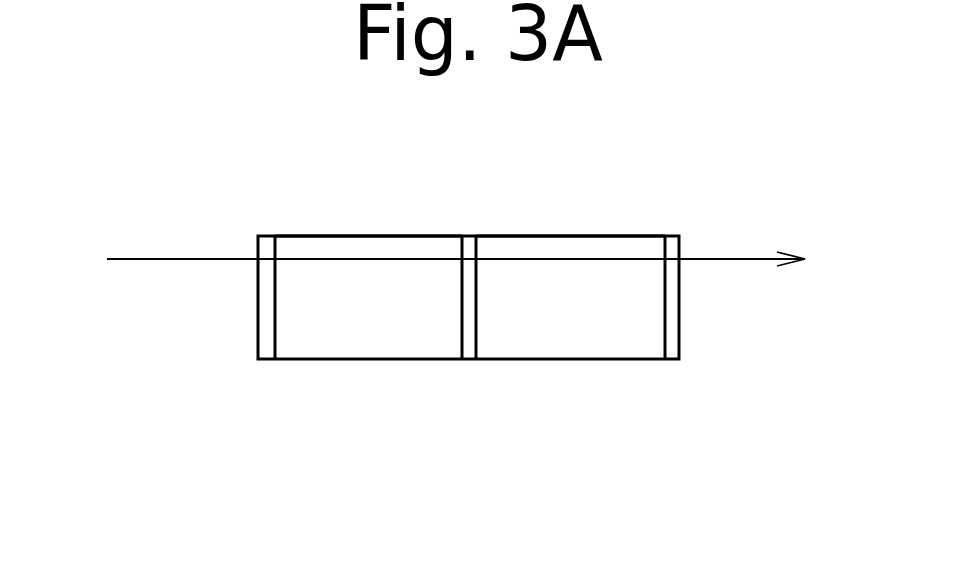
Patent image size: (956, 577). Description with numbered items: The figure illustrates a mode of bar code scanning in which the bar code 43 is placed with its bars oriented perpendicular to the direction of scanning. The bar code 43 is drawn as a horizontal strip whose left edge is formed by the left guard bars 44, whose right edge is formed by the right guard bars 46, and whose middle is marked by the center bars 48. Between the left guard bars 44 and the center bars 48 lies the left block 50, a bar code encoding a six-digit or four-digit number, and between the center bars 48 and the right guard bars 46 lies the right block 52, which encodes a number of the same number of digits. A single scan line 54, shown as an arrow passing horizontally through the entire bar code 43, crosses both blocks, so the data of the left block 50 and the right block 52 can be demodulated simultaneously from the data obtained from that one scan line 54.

The bar code 43 is at (558, 377).
The left guard bars 44 is at (268, 240).
The right guard bars 46 is at (672, 243).
The center bars 48 is at (467, 238).
The left block 50 is at (363, 247).
The right block 52 is at (588, 243).
The scan line 54 is at (153, 259).